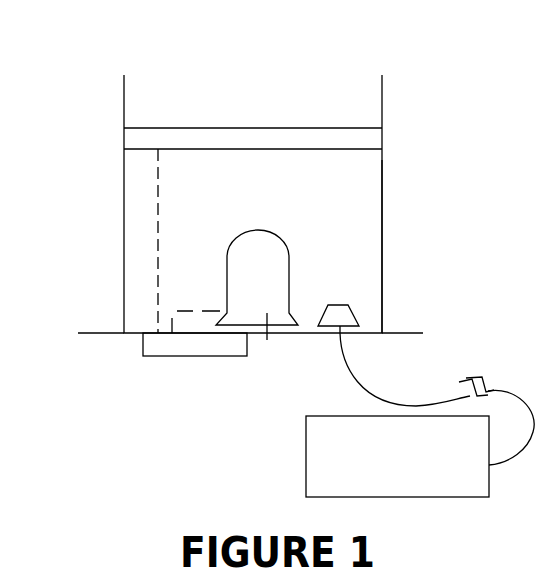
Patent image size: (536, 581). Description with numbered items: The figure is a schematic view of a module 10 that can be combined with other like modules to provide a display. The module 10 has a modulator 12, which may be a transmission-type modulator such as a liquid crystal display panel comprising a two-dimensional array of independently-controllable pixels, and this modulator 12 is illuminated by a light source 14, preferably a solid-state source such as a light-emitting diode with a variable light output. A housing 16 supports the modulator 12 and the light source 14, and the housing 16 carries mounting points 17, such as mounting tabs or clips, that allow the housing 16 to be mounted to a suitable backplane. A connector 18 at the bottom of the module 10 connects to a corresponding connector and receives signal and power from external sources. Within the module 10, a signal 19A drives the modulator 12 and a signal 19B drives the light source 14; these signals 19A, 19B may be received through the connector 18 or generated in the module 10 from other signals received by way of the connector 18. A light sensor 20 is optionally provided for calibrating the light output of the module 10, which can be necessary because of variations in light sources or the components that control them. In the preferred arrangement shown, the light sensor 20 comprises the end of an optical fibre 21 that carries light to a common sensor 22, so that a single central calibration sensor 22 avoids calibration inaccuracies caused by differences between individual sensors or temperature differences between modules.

The module 10 is at (350, 74).
The modulator 12 is at (382, 137).
The light source 14 is at (267, 340).
The housing 16 is at (382, 221).
The mounting points 17 is at (113, 333).
The connector 18 is at (165, 357).
The signal 19A is at (158, 200).
The signal 19B is at (195, 310).
The light sensor 20 is at (350, 308).
The optical fibre 21 is at (416, 406).
The common sensor 22 is at (306, 462).